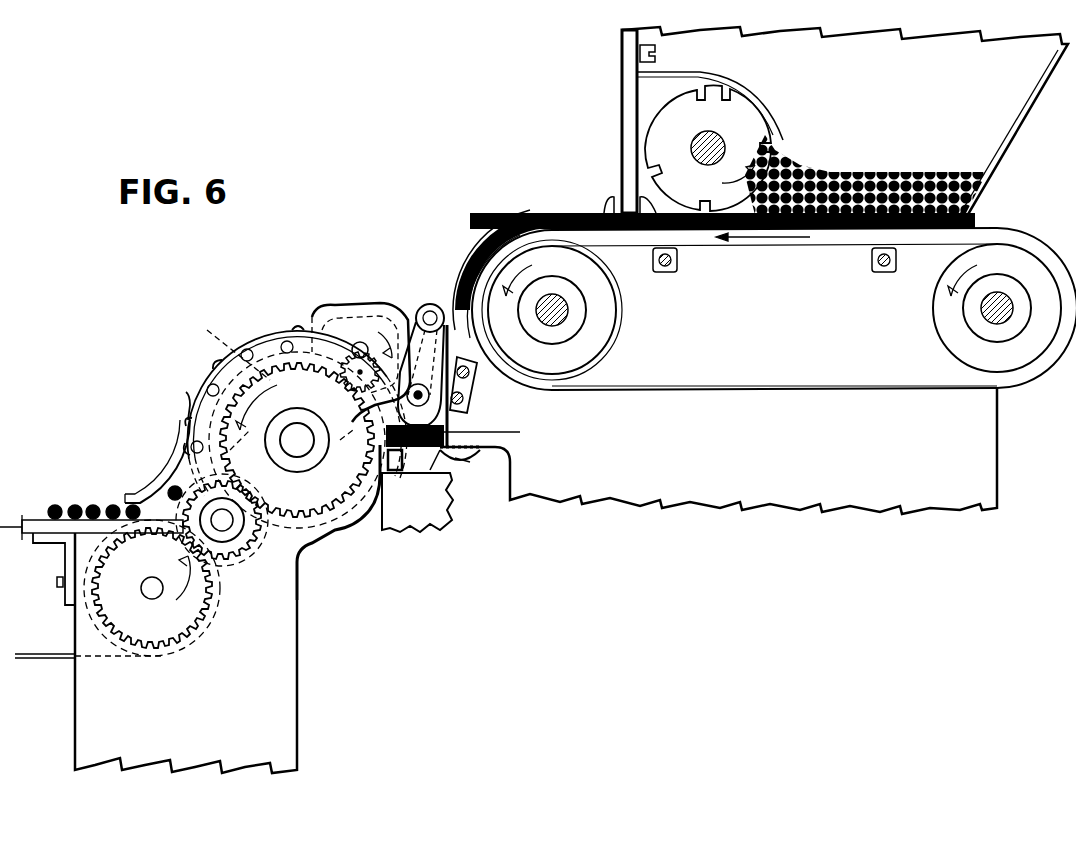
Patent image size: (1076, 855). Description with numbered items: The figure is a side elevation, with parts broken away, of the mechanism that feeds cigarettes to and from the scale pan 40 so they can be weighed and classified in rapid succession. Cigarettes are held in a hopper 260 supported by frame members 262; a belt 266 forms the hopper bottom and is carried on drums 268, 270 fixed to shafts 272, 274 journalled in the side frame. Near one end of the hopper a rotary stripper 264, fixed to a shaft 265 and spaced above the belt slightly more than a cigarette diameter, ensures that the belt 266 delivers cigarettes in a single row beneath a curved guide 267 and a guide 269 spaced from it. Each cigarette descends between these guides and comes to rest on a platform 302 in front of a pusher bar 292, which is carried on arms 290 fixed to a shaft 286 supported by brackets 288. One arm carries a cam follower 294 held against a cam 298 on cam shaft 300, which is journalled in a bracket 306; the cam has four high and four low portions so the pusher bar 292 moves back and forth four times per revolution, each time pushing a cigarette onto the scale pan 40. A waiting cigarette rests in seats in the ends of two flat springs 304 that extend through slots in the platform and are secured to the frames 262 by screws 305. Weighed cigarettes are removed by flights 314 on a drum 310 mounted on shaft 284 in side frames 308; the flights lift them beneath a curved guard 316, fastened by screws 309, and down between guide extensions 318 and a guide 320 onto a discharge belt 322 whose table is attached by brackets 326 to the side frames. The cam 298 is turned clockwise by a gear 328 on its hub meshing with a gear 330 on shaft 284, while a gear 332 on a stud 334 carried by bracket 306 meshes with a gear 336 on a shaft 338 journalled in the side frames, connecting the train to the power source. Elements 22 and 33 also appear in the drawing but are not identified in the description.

The feed tray 22 is at (44, 520).
The mounting plate 33 is at (430, 523).
The scale pan 40 is at (393, 452).
The hopper 260 is at (1007, 140).
The frame members 262 is at (810, 490).
The rotary stripper 264 is at (763, 122).
The shaft 265 is at (703, 138).
The belt 266 is at (817, 232).
The curved guide 267 is at (497, 220).
The drum 268 is at (943, 307).
The guide 269 is at (470, 338).
The drum 270 is at (608, 295).
The shaft 272 is at (983, 315).
The shaft 274 is at (570, 314).
The shaft 284 is at (285, 441).
The shaft 286 is at (423, 333).
The brackets 288 is at (470, 385).
The arm 290 is at (437, 303).
The pusher bar 292 is at (452, 438).
The cam follower 294 is at (452, 405).
The cam 298 is at (340, 305).
The cam shaft 300 is at (360, 342).
The platform 302 is at (412, 458).
The flat springs 304 is at (463, 458).
The screws 305 is at (480, 458).
The bracket 306 is at (330, 345).
The side frames 308 is at (272, 722).
The screws 309 is at (218, 363).
The drum 310 is at (310, 530).
The flights 314 is at (383, 562).
The curved guard 316 is at (268, 337).
The guide extensions 318 is at (172, 482).
The guide 320 is at (165, 502).
The belt 322 is at (48, 660).
The brackets 326 is at (68, 592).
The gear 328 is at (355, 382).
The gear 330 is at (237, 390).
The gear 332 is at (228, 562).
The stud 334 is at (232, 540).
The gear 336 is at (182, 652).
The shaft 338 is at (150, 592).